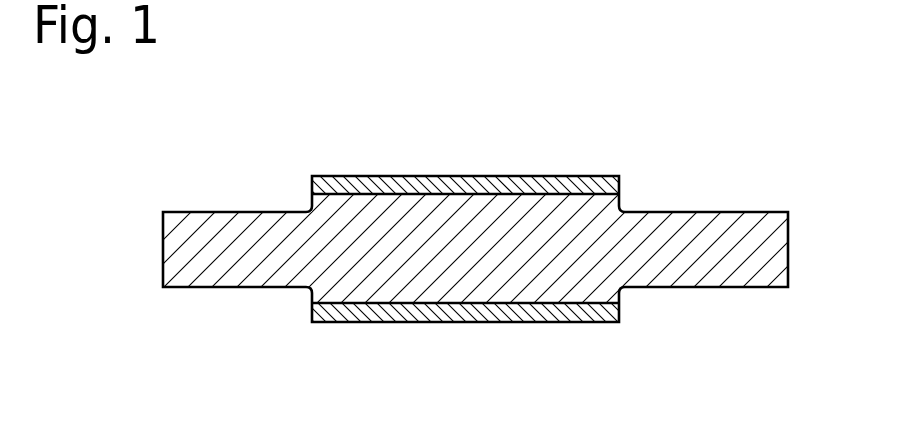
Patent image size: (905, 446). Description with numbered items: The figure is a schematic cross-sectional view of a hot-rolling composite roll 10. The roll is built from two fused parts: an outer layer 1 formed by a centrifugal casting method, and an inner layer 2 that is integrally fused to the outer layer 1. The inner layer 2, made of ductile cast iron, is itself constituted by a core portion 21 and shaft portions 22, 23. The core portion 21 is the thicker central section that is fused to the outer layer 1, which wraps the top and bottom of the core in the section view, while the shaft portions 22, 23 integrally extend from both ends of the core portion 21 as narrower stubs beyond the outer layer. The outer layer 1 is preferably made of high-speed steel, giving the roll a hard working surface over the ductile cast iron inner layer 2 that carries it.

The hot-rolling composite roll 10 is at (489, 213).
The inner layer 2 is at (489, 237).
The shaft portion 22 is at (235, 222).
The core portion 21 is at (482, 218).
The shaft portion 23 is at (703, 223).
The outer layer 1 is at (403, 188).